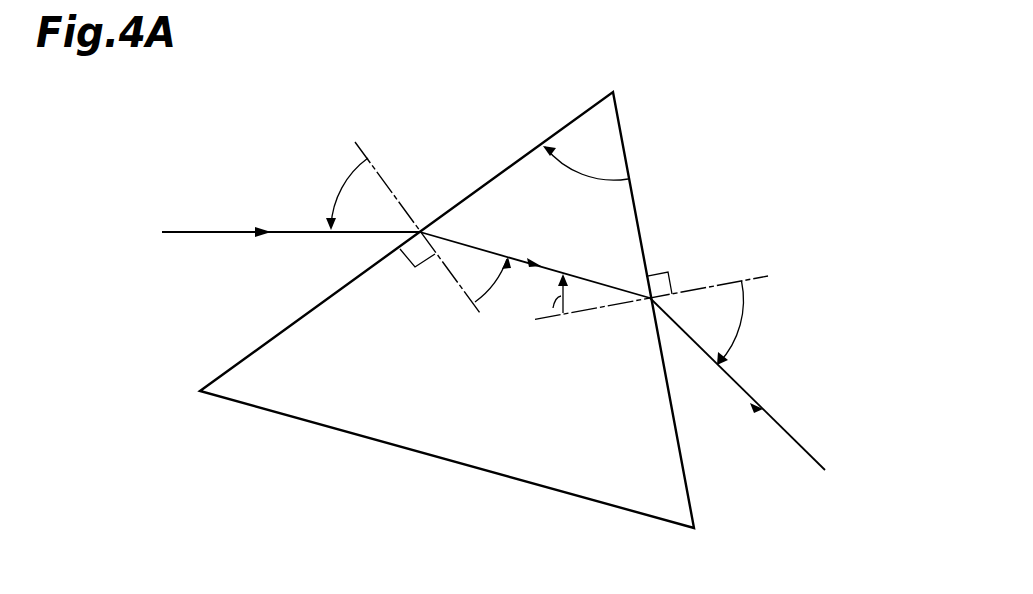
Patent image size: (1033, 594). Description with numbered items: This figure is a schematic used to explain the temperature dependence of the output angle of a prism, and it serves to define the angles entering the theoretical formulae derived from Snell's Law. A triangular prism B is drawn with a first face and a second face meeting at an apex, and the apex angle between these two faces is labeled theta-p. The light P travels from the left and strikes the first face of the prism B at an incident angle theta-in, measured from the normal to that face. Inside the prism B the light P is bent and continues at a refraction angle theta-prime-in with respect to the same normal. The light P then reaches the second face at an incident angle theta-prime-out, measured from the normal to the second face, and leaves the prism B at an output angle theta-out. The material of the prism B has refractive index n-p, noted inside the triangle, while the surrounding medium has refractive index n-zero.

The light P is at (204, 233).
The prism B is at (641, 199).